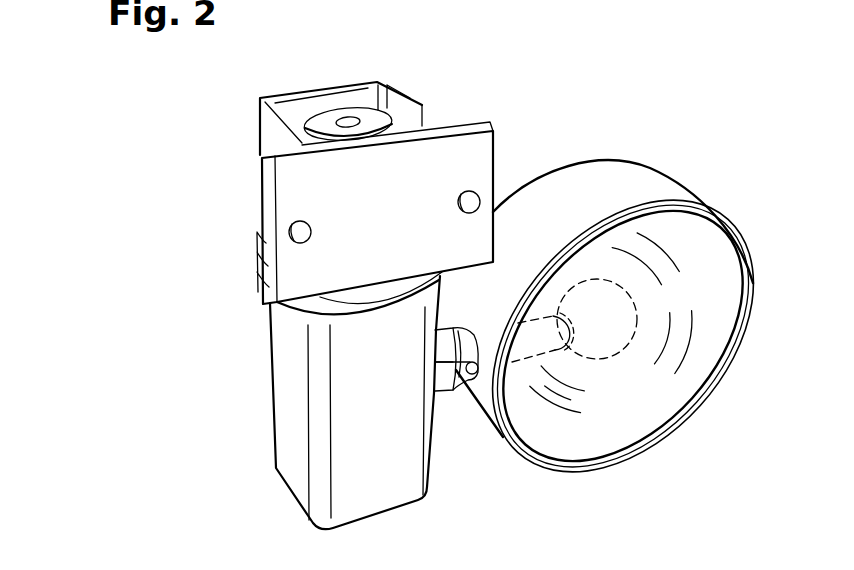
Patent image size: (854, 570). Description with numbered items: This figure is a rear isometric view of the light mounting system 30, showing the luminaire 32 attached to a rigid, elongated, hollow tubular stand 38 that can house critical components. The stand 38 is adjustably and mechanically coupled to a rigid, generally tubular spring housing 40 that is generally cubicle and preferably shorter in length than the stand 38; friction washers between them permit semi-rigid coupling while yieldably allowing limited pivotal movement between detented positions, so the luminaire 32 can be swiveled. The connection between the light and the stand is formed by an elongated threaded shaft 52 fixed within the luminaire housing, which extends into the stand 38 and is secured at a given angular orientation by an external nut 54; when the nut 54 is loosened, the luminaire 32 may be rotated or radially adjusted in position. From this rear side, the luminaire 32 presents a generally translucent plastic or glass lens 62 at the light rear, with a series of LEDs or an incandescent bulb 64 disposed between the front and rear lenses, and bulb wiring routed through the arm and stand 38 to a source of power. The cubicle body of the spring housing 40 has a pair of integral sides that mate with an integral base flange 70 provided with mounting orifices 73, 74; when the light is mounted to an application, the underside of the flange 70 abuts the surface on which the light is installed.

The light mounting system 30 is at (552, 120).
The luminaire 32 is at (696, 175).
The stand 38 is at (269, 433).
The spring housing 40 is at (245, 138).
The threaded shaft 52 is at (463, 390).
The external nut 54 is at (443, 365).
The lens 62 is at (692, 333).
The bulb 64 is at (634, 330).
The base flange 70 is at (293, 187).
The mounting orifice 73 is at (479, 196).
The mounting orifice 74 is at (289, 226).